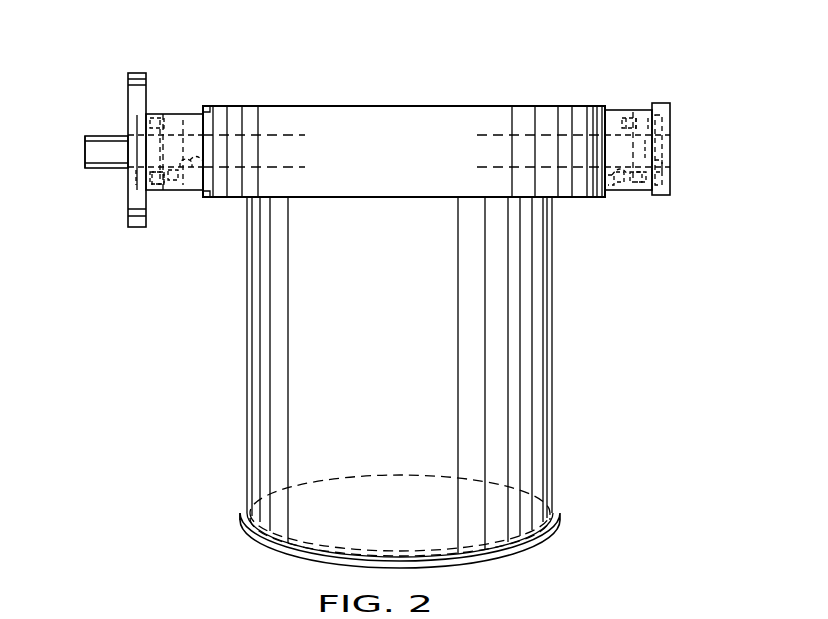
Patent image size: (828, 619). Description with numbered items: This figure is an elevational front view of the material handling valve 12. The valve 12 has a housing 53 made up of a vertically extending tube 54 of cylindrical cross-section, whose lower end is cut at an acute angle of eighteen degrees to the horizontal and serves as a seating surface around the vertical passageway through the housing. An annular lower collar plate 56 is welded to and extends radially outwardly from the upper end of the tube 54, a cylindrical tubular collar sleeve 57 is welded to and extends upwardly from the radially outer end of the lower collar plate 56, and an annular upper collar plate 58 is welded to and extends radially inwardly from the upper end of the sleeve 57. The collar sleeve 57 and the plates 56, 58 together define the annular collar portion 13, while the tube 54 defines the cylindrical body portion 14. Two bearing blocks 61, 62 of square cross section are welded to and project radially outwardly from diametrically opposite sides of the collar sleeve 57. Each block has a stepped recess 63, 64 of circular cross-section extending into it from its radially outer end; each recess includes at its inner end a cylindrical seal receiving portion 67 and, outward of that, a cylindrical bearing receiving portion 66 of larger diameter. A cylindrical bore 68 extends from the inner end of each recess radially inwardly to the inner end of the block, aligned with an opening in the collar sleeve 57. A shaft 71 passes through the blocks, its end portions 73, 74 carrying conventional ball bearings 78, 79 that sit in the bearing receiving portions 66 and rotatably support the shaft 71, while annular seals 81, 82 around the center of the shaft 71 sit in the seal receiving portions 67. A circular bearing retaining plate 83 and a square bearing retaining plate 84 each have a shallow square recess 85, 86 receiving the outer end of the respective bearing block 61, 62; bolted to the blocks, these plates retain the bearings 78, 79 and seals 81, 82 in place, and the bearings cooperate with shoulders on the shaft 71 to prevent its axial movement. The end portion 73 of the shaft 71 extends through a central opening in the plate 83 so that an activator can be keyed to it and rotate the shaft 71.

The valve 12 is at (628, 293).
The annular collar portion 13 is at (578, 100).
The cylindrical body portion 14 is at (556, 353).
The housing 53 is at (556, 301).
The tube 54 is at (247, 338).
The lower collar plate 56 is at (224, 198).
The collar sleeve 57 is at (433, 130).
The upper collar plate 58 is at (381, 106).
The bearing block 61 is at (200, 108).
The bearing block 62 is at (611, 122).
The stepped recess 63 is at (150, 113).
The stepped recess 64 is at (637, 113).
The bearing receiving portion 66 is at (160, 190).
The seal receiving portion 67 is at (175, 176).
The bore 68 is at (196, 178).
The shaft 71 is at (84, 130).
The end portion 73 is at (107, 145).
The end portion 74 is at (646, 152).
The ball bearing 78 is at (158, 115).
The ball bearing 79 is at (650, 113).
The annular seal 81 is at (179, 115).
The annular seal 82 is at (626, 113).
The circular bearing retaining plate 83 is at (138, 73).
The square bearing retaining plate 84 is at (666, 105).
The shallow square recess 85 is at (135, 176).
The shallow square recess 86 is at (660, 168).